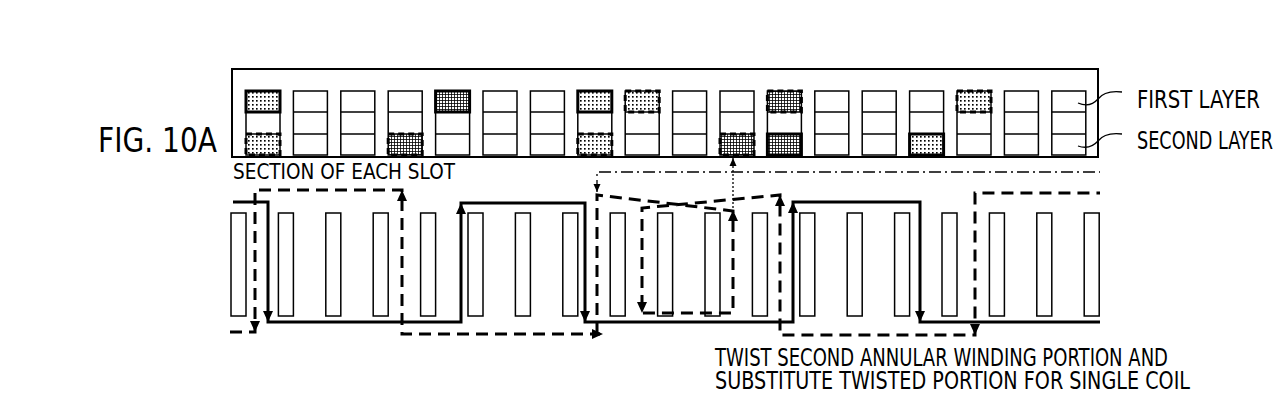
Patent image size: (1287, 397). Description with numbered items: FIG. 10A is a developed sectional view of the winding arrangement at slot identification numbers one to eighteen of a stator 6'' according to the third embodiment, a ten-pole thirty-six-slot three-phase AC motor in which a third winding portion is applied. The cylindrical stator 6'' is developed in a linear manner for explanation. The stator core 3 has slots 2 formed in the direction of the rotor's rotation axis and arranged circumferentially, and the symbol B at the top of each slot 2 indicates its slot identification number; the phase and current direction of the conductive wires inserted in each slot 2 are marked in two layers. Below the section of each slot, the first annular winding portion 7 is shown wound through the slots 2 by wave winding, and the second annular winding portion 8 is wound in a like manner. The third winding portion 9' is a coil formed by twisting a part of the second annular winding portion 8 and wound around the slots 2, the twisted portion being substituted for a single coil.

The slot 2 is at (548, 318).
The stator core 3 is at (528, 70).
The stator 6'' is at (665, 80).
The first annular winding portion 7 is at (312, 324).
The second annular winding portion 8 is at (434, 336).
The third winding portion 9' is at (847, 272).
The slot identification number B is at (657, 70).